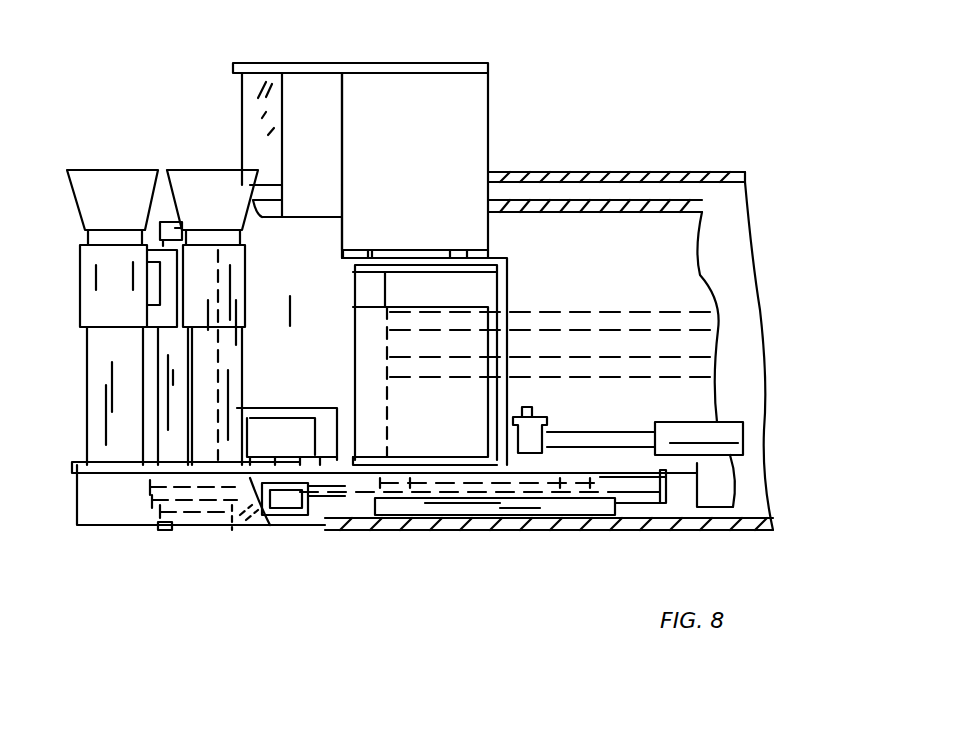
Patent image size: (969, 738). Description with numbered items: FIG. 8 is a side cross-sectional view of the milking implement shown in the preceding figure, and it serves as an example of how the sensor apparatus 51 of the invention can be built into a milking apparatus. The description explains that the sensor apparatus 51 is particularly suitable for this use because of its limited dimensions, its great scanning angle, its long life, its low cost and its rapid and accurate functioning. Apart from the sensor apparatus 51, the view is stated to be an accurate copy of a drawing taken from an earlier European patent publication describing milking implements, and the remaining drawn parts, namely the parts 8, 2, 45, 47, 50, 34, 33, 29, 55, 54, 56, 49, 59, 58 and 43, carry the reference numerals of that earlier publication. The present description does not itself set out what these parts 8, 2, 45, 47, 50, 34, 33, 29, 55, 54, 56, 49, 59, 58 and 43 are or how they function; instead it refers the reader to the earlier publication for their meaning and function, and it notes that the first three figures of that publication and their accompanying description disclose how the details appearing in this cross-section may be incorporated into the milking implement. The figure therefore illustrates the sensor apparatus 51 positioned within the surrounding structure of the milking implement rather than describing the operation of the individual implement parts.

The apparatus 8 is at (348, 62).
The housing 2 is at (252, 88).
The sensor apparatus 51 is at (491, 125).
The first hopper 45 is at (128, 152).
The second hopper 47 is at (200, 182).
The outlet 50 is at (170, 232).
The tube 34 is at (720, 150).
The wall 33 is at (686, 285).
The liquid level 29 is at (602, 312).
The channel 55 is at (310, 268).
The pump 54 is at (290, 386).
The reservoir 56 is at (465, 405).
The heater 49 is at (670, 422).
The connector 59 is at (232, 528).
The plate 58 is at (450, 508).
The sensor 43 is at (647, 500).